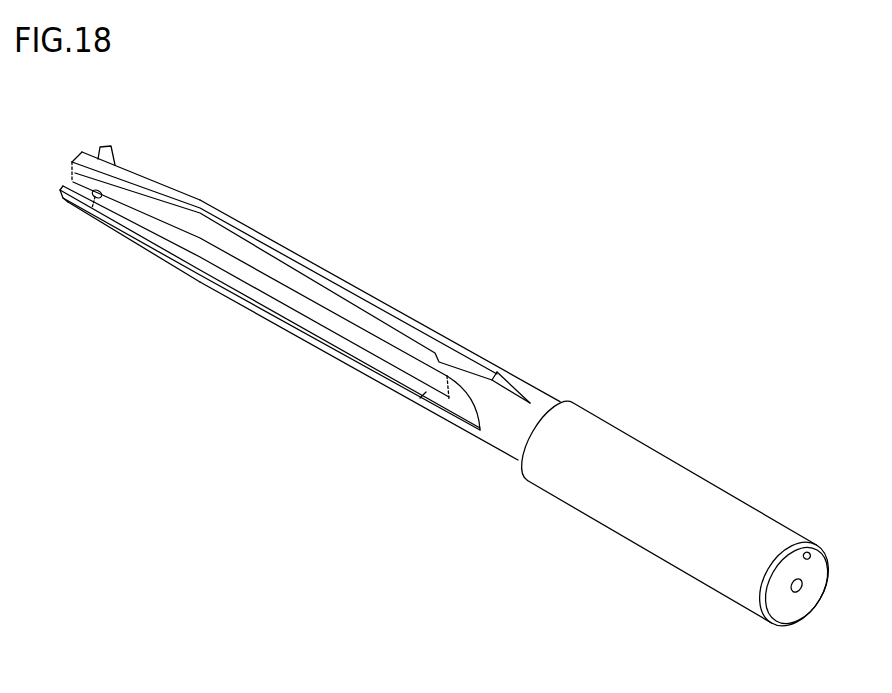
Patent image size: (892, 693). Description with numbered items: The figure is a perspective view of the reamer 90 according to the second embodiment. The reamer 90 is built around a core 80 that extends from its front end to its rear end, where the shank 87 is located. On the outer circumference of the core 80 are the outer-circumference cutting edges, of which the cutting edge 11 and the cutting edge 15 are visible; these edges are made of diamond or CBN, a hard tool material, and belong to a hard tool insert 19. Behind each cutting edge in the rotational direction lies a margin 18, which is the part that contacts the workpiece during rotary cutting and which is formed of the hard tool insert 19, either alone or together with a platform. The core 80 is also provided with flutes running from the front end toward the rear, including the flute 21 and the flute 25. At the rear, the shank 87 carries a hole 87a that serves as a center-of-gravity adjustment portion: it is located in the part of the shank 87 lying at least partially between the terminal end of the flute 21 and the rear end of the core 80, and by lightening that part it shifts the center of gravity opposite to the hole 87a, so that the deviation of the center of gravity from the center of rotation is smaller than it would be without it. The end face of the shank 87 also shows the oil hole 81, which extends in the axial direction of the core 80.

The outer-circumference cutting edge 11 is at (112, 149).
The outer-circumference cutting edge 15 is at (73, 207).
The margin 18 is at (104, 147).
The hard tool insert 19 is at (86, 150).
The flute 21 is at (300, 269).
The flute 25 is at (277, 299).
The core 80 is at (504, 452).
The oil hole 81 is at (801, 590).
The shank 87 is at (762, 509).
The hole 87a is at (823, 551).
The reamer 90 is at (583, 256).